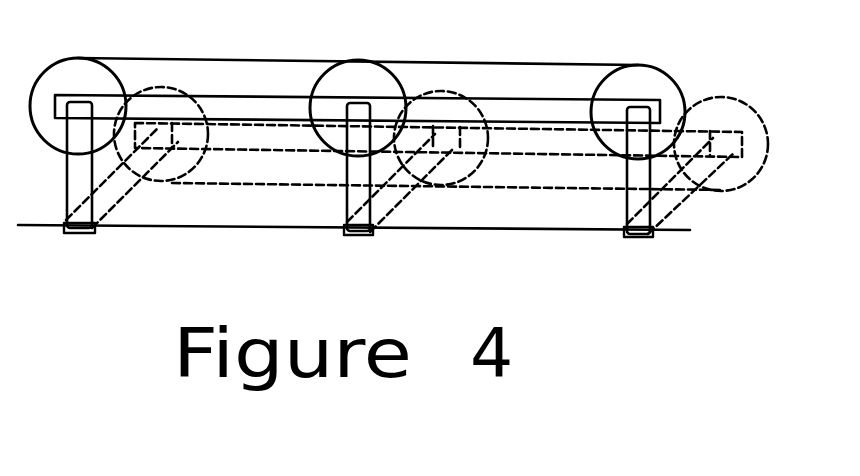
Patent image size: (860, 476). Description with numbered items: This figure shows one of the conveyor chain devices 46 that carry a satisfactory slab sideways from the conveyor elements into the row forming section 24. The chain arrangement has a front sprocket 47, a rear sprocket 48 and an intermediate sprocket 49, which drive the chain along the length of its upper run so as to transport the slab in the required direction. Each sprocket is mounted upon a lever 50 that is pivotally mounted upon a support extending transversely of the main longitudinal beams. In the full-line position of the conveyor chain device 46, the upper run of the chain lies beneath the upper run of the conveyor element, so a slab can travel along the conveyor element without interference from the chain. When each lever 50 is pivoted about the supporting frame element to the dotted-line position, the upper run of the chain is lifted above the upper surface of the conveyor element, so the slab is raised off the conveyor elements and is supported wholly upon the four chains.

The row forming section 24 is at (357, 82).
The conveyor chain device 46 is at (357, 64).
The front sprocket 47 is at (171, 188).
The rear sprocket 48 is at (723, 197).
The intermediate sprocket 49 is at (453, 192).
The lever 50 is at (406, 200).